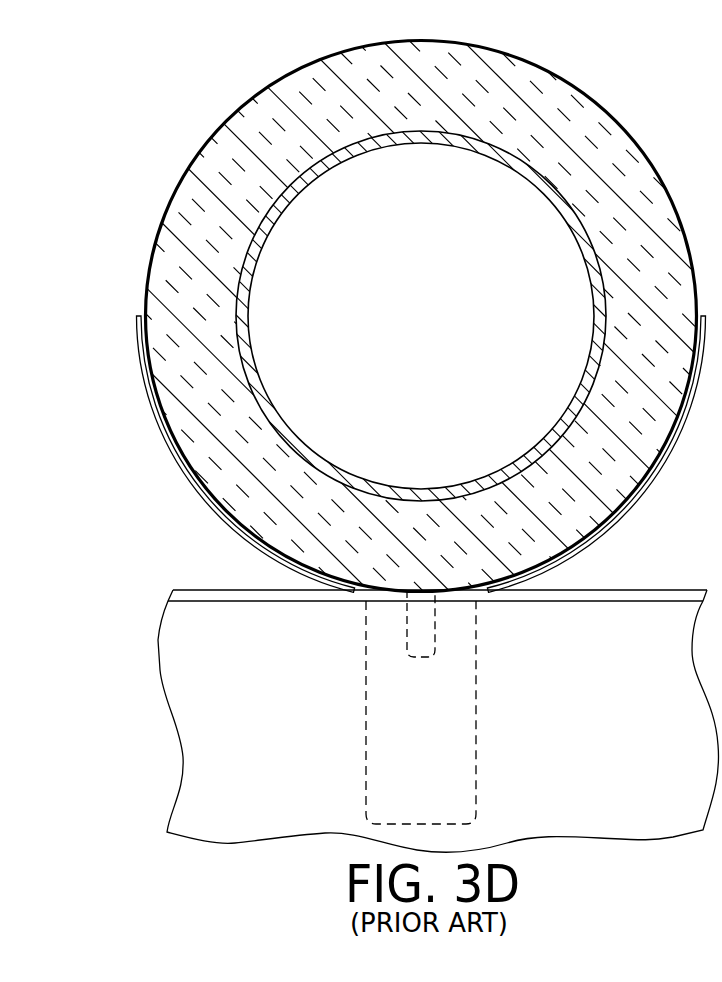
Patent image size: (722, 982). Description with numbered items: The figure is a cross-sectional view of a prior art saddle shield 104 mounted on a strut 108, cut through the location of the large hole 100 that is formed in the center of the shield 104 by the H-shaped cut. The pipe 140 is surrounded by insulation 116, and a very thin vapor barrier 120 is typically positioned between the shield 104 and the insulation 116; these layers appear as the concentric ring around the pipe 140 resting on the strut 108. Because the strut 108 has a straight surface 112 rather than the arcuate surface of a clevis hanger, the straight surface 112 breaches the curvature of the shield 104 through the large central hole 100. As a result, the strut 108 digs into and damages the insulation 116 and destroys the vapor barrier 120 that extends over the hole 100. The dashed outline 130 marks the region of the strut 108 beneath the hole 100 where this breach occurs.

The large hole 100 is at (455, 600).
The shield 104 is at (139, 358).
The strut 108 is at (158, 630).
The straight surface 112 is at (199, 589).
The insulation 116 is at (220, 136).
The vapor barrier 120 is at (168, 221).
The trench 130 is at (479, 739).
The pipe 140 is at (349, 138).